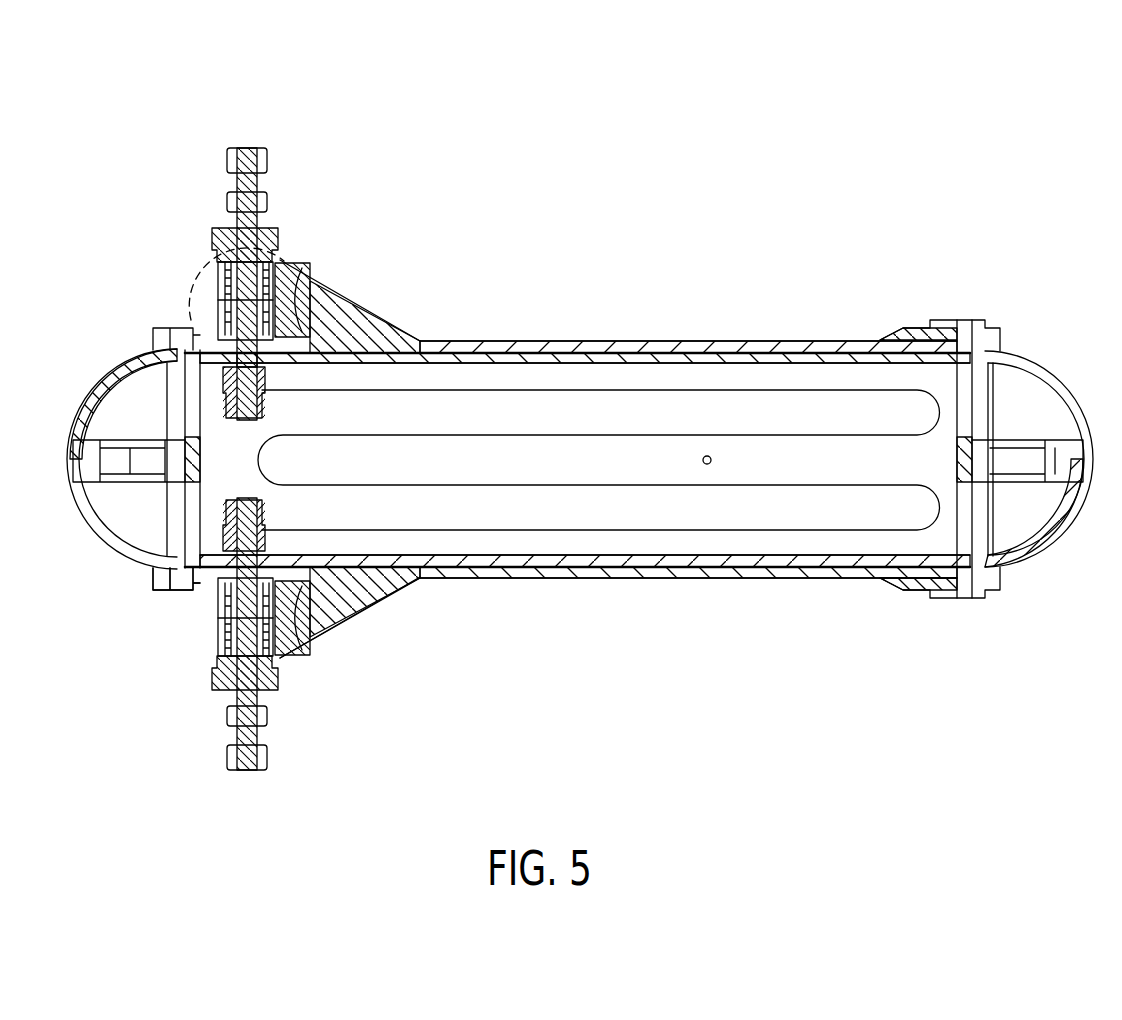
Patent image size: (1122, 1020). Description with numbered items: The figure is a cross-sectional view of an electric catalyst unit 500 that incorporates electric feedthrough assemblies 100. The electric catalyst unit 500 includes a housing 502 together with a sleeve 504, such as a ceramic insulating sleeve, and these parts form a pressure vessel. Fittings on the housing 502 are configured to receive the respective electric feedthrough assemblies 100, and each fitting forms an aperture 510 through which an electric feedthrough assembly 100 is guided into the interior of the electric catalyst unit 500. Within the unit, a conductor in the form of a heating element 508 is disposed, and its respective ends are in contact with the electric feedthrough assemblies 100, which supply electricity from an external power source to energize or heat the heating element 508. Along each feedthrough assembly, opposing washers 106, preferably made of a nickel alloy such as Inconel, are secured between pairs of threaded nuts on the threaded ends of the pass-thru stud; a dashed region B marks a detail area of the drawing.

The electric feedthrough assembly 100 is at (193, 132).
The washer 106 is at (265, 358).
The electric catalyst unit 500 is at (630, 306).
The housing 502 is at (660, 579).
The sleeve 504 is at (733, 569).
The heating element 508 is at (762, 389).
The aperture 510 is at (268, 388).
The detail region B is at (190, 300).